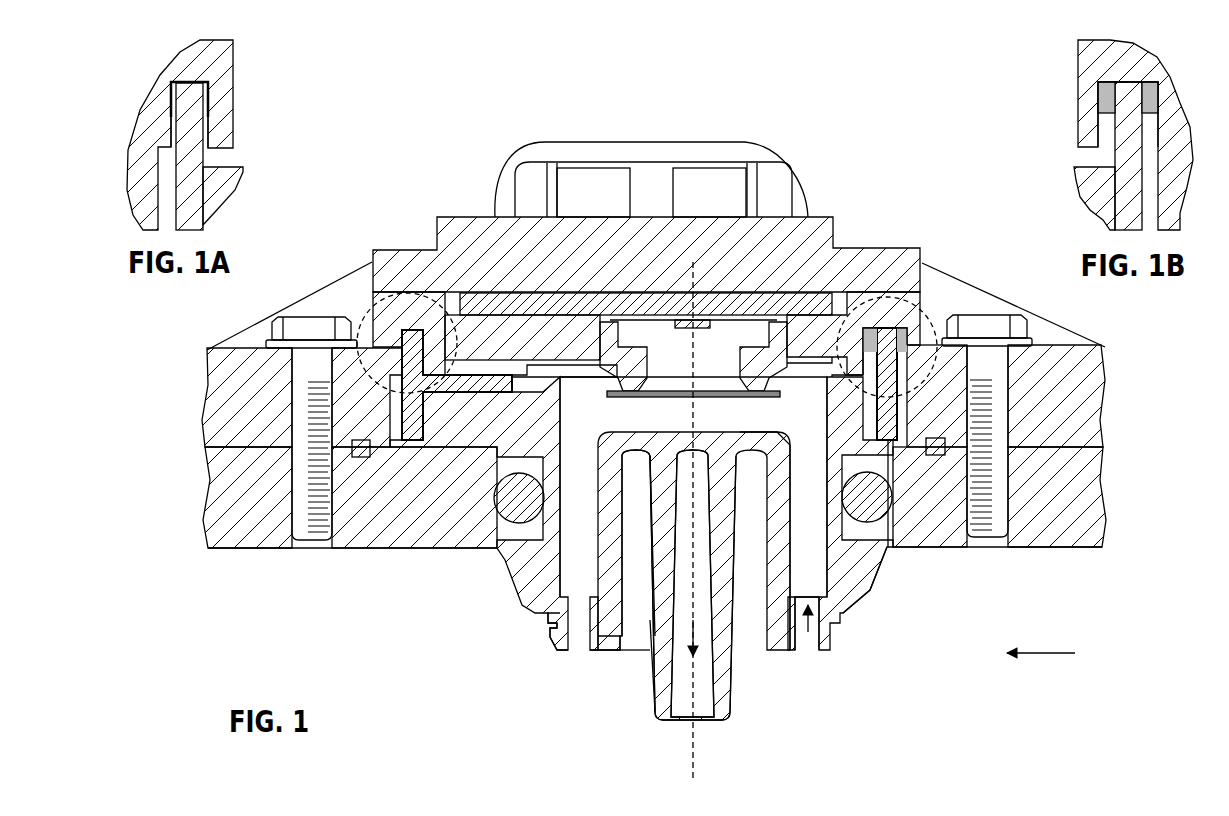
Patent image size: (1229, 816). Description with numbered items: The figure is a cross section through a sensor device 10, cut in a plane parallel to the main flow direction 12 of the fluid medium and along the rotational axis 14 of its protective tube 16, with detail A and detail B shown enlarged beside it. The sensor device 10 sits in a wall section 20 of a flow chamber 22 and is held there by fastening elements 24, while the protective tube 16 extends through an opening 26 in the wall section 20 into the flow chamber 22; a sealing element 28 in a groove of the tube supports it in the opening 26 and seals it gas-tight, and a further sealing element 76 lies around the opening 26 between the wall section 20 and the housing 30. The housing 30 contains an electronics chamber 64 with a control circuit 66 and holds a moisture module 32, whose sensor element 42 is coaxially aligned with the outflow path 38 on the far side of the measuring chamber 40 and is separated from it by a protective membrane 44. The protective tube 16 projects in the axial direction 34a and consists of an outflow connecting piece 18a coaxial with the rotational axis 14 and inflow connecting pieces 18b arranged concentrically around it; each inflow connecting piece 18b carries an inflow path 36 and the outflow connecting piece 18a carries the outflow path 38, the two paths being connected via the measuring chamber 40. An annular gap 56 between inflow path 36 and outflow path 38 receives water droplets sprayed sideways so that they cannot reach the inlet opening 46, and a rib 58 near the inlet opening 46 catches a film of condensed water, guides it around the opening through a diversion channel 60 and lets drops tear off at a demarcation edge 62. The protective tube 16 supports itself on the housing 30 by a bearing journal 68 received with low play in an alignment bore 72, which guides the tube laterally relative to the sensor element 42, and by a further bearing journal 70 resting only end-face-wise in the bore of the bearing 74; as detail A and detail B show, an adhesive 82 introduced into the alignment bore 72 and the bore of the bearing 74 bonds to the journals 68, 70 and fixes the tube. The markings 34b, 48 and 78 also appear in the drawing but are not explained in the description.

In FIG. 1, the sensor device 10 is at (433, 180).
In FIG. 1, the main flow direction 12 is at (1063, 656).
In FIG. 1, the rotational axis 14 is at (695, 762).
In FIG. 1, the protective tube 16 is at (612, 680).
In FIG. 1, the outflow connecting piece 18a is at (663, 663).
In FIG. 1, the inflow connecting piece 18b is at (592, 650).
In FIG. 1, the wall section 20 is at (1060, 500).
In FIG. 1, the flow chamber 22 is at (957, 750).
In FIG. 1, the fastening elements 24 is at (312, 322).
In FIG. 1, the opening 26 is at (888, 540).
In FIG. 1, the sealing element 28 is at (505, 505).
In FIG. 1, the housing 30 is at (848, 262).
In FIG. 1, the moisture module 32 is at (463, 292).
In FIG. 1, the axial direction 34a is at (700, 622).
In FIG. 1, the poppet portion 34b is at (810, 657).
In FIG. 1, the inflow path 36 is at (858, 612).
In FIG. 1, the outflow path 38 is at (683, 688).
In FIG. 1, the measuring chamber 40 is at (748, 422).
In FIG. 1, the sensor element 42 is at (697, 318).
In FIG. 1, the protective membrane 44 is at (640, 396).
In FIG. 1, the inlet opening 46 is at (808, 660).
In FIG. 1, the outlet passage 48 is at (702, 713).
In FIG. 1, the annular gap 56 is at (637, 577).
In FIG. 1, the rib 58 is at (549, 636).
In FIG. 1, the diversion channel 60 is at (548, 622).
In FIG. 1, the demarcation edge 62 is at (556, 652).
In FIG. 1, the electronics chamber 64 is at (800, 163).
In FIG. 1, the control circuit 66 is at (680, 190).
In FIG. 1, the bearing journal 68 is at (365, 325).
In FIG. 1A, the bearing journal 68 is at (192, 155).
In FIG. 1, the further bearing journal 70 is at (897, 340).
In FIG. 1A, the further bearing journal 70 is at (614, 408).
In FIG. 1B, the further bearing journal 70 is at (1128, 160).
In FIG. 1, the alignment bore 72 is at (413, 330).
In FIG. 1A, the alignment bore 72 is at (188, 84).
In FIG. 1B, the alignment bore 72 is at (1120, 86).
In FIG. 1, the bore of the bearing 74 is at (883, 328).
In FIG. 1, the further sealing element 76 is at (362, 458).
In FIG. 1, the chamfer 78 is at (873, 585).
In FIG. 1A, the adhesive 82 is at (206, 100).
In FIG. 1B, the adhesive 82 is at (1105, 100).
In FIG. 1, the detail A is at (400, 303).
In FIG. 1, the detail B is at (903, 303).